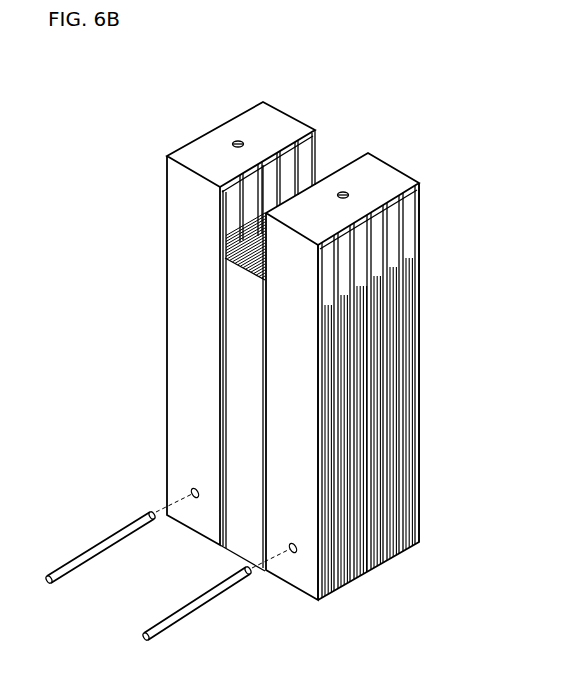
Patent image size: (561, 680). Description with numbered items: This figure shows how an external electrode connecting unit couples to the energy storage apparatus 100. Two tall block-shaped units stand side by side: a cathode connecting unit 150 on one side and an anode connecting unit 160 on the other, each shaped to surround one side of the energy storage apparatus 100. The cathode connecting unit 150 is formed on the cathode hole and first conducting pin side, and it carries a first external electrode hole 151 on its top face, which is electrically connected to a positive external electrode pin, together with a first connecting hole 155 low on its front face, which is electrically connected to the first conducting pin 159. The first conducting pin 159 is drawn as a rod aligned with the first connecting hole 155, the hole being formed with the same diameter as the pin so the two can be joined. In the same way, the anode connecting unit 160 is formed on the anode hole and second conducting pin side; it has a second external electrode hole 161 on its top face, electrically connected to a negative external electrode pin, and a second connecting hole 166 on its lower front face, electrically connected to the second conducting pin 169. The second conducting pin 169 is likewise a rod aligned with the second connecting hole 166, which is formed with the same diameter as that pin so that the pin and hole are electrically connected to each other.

The energy storage apparatus 100 is at (273, 365).
The cathode connecting unit 150 is at (278, 122).
The first external electrode hole 151 is at (234, 143).
The first connecting hole 155 is at (191, 492).
The first conducting pin 159 is at (88, 553).
The anode connecting unit 160 is at (373, 177).
The second external electrode hole 161 is at (349, 196).
The second connecting hole 166 is at (297, 552).
The second conducting pin 169 is at (187, 613).